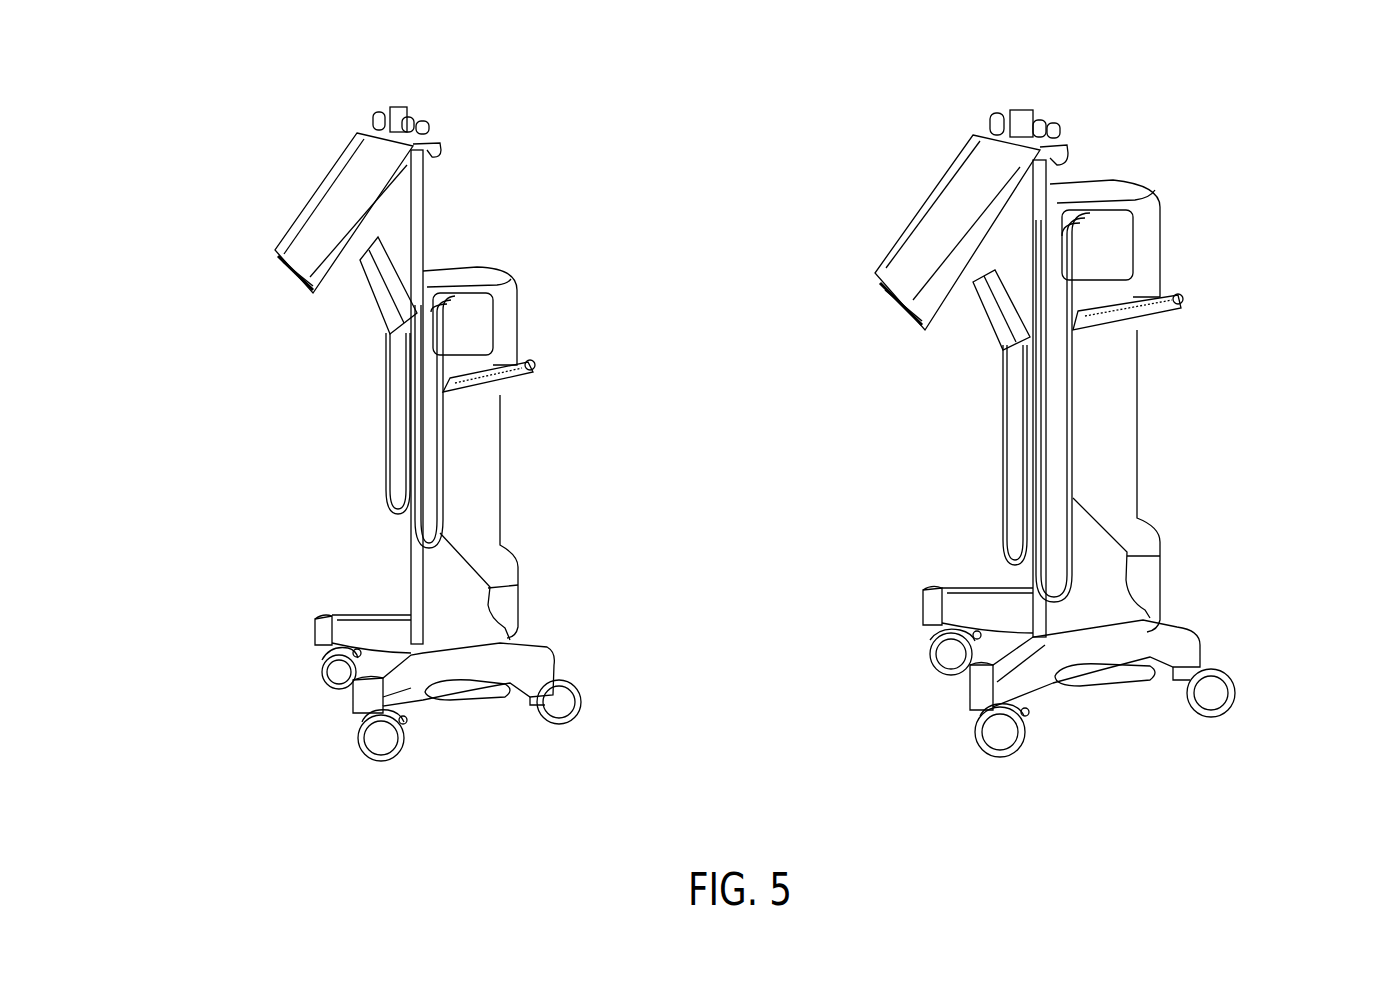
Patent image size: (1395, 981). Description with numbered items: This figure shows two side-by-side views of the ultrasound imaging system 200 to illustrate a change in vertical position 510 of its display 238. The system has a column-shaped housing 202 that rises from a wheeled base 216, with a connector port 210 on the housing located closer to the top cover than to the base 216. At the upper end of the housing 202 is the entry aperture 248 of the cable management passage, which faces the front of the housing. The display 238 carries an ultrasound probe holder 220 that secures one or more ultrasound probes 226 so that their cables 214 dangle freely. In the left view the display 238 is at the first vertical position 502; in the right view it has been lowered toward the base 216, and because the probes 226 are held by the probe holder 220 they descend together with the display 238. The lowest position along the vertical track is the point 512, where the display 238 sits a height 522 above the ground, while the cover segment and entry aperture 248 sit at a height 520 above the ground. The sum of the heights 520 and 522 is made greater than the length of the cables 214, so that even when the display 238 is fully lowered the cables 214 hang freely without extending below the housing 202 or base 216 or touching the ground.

The ultrasound imaging system 200 is at (221, 112).
The housing 202 is at (480, 533).
The connector port 210 is at (500, 414).
The cables 214 is at (443, 447).
The base 216 is at (322, 585).
The ultrasound probe holder 220 is at (455, 145).
The ultrasound probes 226 is at (389, 95).
The display 238 is at (275, 256).
The entry aperture 248 is at (452, 307).
The first vertical position 502 is at (383, 312).
The change in vertical position 510 is at (1000, 375).
The point 512 is at (404, 466).
The height 520 is at (660, 271).
The height 522 is at (238, 467).